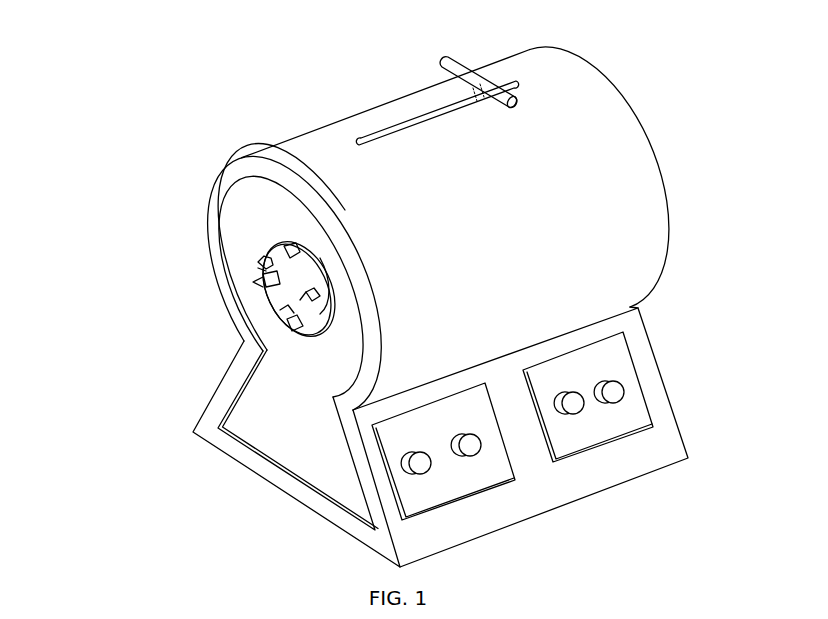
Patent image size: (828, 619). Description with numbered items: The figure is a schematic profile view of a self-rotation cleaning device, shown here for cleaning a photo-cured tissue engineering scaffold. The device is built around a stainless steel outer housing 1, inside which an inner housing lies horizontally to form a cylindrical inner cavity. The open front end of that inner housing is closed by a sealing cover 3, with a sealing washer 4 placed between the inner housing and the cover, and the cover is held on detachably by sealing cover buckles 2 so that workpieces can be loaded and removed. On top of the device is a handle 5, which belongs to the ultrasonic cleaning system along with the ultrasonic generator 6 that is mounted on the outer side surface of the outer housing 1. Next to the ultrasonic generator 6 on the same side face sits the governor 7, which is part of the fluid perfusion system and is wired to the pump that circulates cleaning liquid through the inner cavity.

The outer housing 1 is at (333, 143).
The sealing cover buckle 2 is at (253, 260).
The sealing cover 3 is at (282, 285).
The sealing washer 4 is at (317, 276).
The handle 5 is at (462, 65).
The ultrasonic generator 6 is at (620, 413).
The governor 7 is at (470, 473).